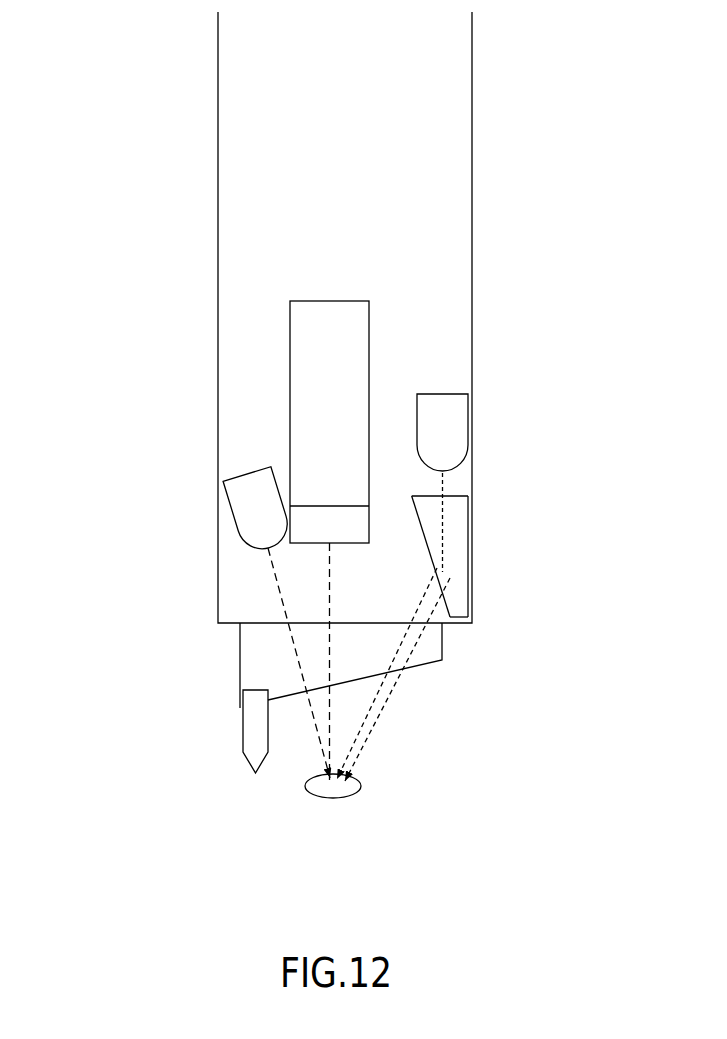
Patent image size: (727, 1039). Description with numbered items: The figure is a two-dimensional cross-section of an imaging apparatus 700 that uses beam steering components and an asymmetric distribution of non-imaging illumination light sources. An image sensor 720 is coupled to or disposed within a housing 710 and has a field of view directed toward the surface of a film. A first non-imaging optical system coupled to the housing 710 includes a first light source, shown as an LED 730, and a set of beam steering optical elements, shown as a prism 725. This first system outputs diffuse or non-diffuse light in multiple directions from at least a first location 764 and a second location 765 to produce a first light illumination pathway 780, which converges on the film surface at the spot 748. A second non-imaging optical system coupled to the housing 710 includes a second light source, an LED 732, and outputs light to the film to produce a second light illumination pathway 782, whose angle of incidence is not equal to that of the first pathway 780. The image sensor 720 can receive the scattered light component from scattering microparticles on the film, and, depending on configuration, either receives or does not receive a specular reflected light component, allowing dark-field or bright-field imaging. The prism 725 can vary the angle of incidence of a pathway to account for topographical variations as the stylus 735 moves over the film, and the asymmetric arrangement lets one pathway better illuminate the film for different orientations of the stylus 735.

The imaging apparatus 700 is at (98, 37).
The housing 710 is at (205, 167).
The image sensor 720 is at (338, 333).
The LED 730 is at (438, 422).
The LED 732 is at (250, 508).
The first location 764 is at (516, 543).
The prism 725 is at (450, 570).
The second location 765 is at (463, 577).
The light illumination pathway 780 is at (385, 718).
The focal spot 748 is at (307, 790).
The light illumination pathway 782 is at (288, 641).
The stylus 735 is at (243, 735).